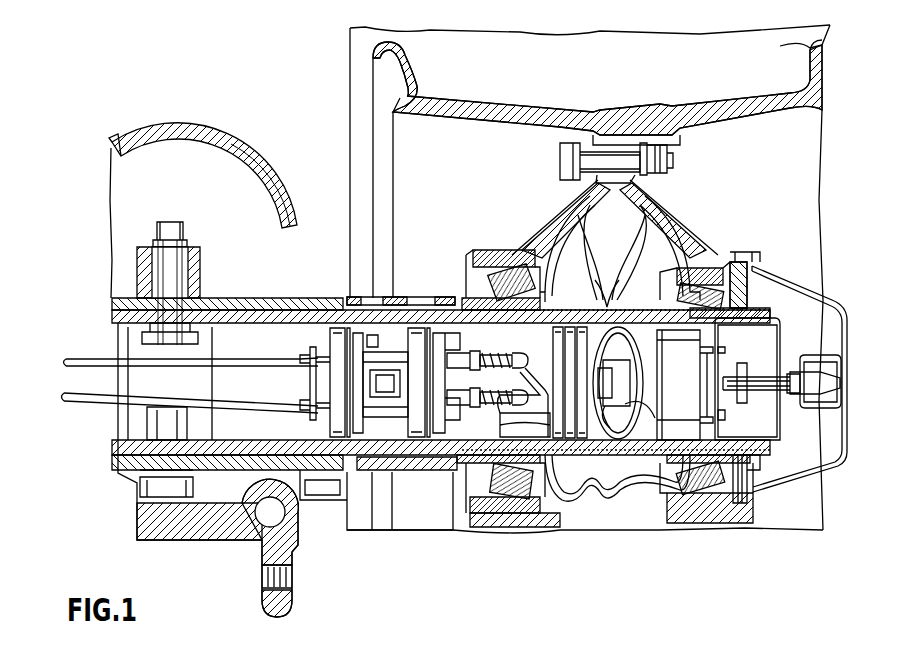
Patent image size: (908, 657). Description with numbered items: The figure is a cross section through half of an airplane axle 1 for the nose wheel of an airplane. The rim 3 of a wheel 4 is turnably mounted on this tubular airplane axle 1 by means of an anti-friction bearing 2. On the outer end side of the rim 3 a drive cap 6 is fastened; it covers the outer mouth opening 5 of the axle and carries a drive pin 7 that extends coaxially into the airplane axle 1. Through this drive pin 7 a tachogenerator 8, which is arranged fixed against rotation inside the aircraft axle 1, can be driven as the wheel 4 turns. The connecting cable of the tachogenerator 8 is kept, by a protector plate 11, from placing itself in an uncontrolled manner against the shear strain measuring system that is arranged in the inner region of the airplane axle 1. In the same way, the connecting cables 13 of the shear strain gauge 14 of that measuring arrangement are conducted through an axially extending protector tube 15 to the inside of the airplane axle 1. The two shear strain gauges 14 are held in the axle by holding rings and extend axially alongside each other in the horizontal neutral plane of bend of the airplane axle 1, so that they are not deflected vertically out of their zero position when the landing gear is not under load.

The airplane axle 1 is at (397, 322).
The anti-friction bearing 2 is at (522, 493).
The rim 3 is at (800, 98).
The wheel 4 is at (780, 46).
The outer mouth opening 5 is at (757, 338).
The drive cap 6 is at (840, 456).
The drive pin 7 is at (845, 384).
The tachogenerator 8 is at (745, 483).
The protector plate 11 is at (532, 393).
The connecting cables 13 is at (70, 359).
The shear strain gauge 14 is at (395, 402).
The protector tube 15 is at (400, 410).